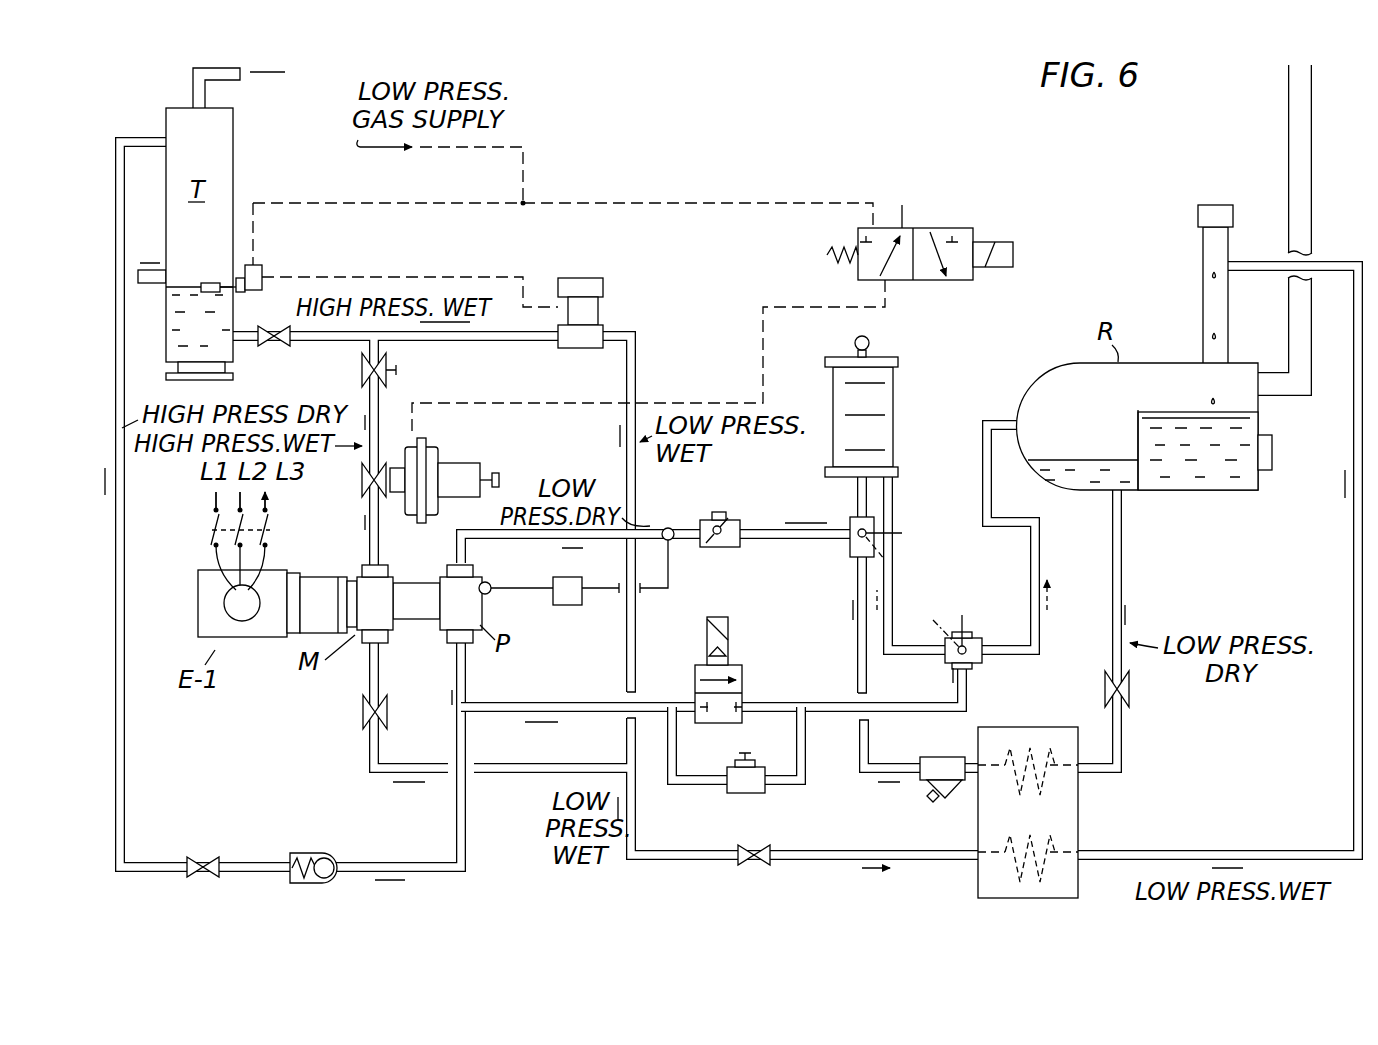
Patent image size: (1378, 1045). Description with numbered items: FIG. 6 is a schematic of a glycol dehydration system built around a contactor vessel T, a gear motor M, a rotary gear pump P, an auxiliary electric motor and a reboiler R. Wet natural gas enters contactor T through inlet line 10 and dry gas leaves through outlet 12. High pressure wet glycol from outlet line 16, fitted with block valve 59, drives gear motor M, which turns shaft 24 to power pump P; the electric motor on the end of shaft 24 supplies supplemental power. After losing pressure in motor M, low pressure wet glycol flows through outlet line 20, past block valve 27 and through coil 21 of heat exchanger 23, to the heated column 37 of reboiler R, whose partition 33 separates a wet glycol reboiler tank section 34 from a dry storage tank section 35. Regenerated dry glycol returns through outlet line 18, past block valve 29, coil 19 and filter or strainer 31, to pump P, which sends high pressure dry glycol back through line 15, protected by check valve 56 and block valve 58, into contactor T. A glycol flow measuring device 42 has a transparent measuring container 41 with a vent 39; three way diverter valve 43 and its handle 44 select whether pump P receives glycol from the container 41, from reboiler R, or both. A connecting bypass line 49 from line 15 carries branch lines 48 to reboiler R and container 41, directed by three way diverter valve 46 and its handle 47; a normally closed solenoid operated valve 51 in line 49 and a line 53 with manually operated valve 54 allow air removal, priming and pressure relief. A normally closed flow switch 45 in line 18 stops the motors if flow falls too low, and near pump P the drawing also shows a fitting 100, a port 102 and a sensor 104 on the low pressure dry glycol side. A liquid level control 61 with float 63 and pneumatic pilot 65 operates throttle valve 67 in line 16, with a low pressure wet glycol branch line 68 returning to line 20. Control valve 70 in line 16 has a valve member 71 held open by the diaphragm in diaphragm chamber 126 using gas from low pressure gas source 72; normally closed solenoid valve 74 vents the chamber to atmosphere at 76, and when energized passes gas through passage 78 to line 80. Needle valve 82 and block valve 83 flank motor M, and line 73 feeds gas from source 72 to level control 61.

The inlet line 10 is at (149, 284).
The outlet 12 is at (193, 73).
The high pressure dry glycol line 15 is at (124, 553).
The outlet line 16 is at (240, 334).
The outlet line 18 is at (527, 543).
The coil 19 is at (1052, 750).
The outlet line 20 is at (1352, 582).
The coil 21 is at (1055, 838).
The heat exchanger 23 is at (1026, 799).
The shaft 24 is at (312, 595).
The block valve 27 is at (760, 866).
The block valve 29 is at (1130, 693).
The filter or strainer 31 is at (941, 756).
The partition 33 is at (1130, 415).
The wet glycol reboiler tank section 34 is at (1232, 492).
The dry storage tank section 35 is at (1090, 458).
The heated column 37 is at (1203, 246).
The vent 39 is at (869, 339).
The measuring container 41 is at (893, 405).
The glycol flow measuring device 42 is at (894, 393).
The three way diverter valve 43 is at (852, 518).
The handle 44 is at (902, 528).
The flow switch 45 is at (731, 547).
The three way diverter valve 46 is at (982, 660).
The handle 47 is at (965, 620).
The branch lines 48 is at (1006, 518).
The connecting bypass line 49 is at (548, 702).
The solenoid operated valve 51 is at (742, 680).
The line 53 is at (678, 785).
The manually operated valve 54 is at (760, 795).
The check valve 56 is at (312, 852).
The block valve 58 is at (199, 856).
The block valve 59 is at (278, 346).
The liquid level control 61 is at (255, 265).
The float 63 is at (212, 282).
The pneumatic pilot 65 is at (262, 276).
The throttle valve 67 is at (600, 282).
The low pressure wet glycol branch line 68 is at (638, 368).
The control valve 70 is at (455, 466).
The valve member 71 is at (360, 485).
The low pressure gas source 72 is at (530, 150).
The line 73 is at (624, 203).
The solenoid valve 74 is at (920, 249).
The vent to atmosphere 76 is at (902, 212).
The passage 78 is at (940, 270).
The line 80 is at (502, 402).
The needle valve 82 is at (360, 368).
The block valve 83 is at (361, 708).
The fitting 100 is at (667, 527).
The port 102 is at (492, 594).
The sensor 104 is at (570, 606).
The diaphragm chamber 126 is at (422, 440).